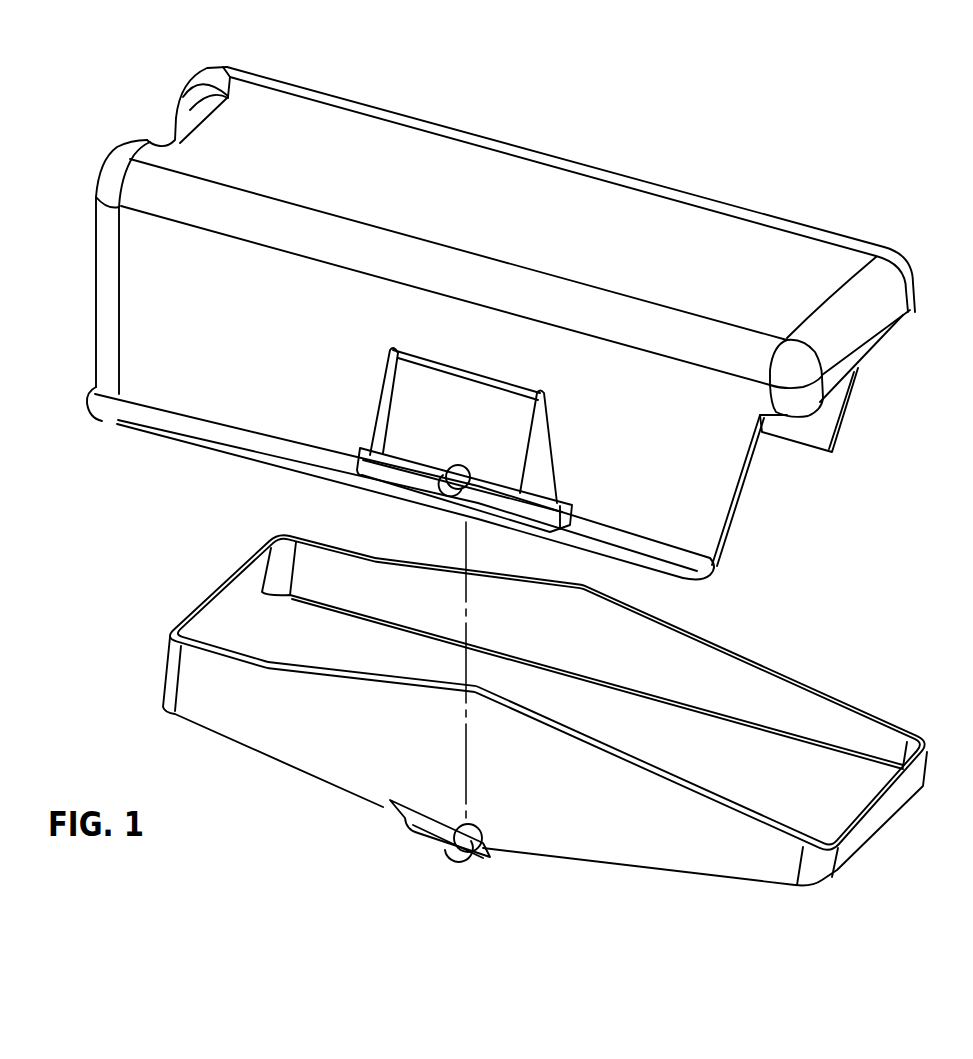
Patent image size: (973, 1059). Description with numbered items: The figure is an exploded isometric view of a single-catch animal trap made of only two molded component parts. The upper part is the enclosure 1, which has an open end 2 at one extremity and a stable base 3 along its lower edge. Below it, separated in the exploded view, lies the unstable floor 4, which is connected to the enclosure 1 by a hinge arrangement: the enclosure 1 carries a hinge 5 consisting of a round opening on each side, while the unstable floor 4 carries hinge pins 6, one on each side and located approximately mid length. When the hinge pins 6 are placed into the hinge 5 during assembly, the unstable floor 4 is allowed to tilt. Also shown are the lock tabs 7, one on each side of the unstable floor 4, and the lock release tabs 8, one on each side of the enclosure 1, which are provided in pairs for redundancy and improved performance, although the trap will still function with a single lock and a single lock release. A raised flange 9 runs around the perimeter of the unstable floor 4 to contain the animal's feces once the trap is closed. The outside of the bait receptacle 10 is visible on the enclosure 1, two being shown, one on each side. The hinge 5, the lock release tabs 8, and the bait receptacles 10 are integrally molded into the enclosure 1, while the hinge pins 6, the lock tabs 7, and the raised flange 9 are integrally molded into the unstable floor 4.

The enclosure 1 is at (657, 215).
The open end 2 is at (847, 420).
The stable base 3 is at (684, 570).
The unstable floor 4 is at (867, 782).
The hinge 5 is at (443, 482).
The hinge pins 6 is at (462, 866).
The lock tabs 7 is at (415, 837).
The lock release tabs 8 is at (413, 447).
The raised flange 9 is at (223, 582).
The bait receptacle 10 is at (208, 75).